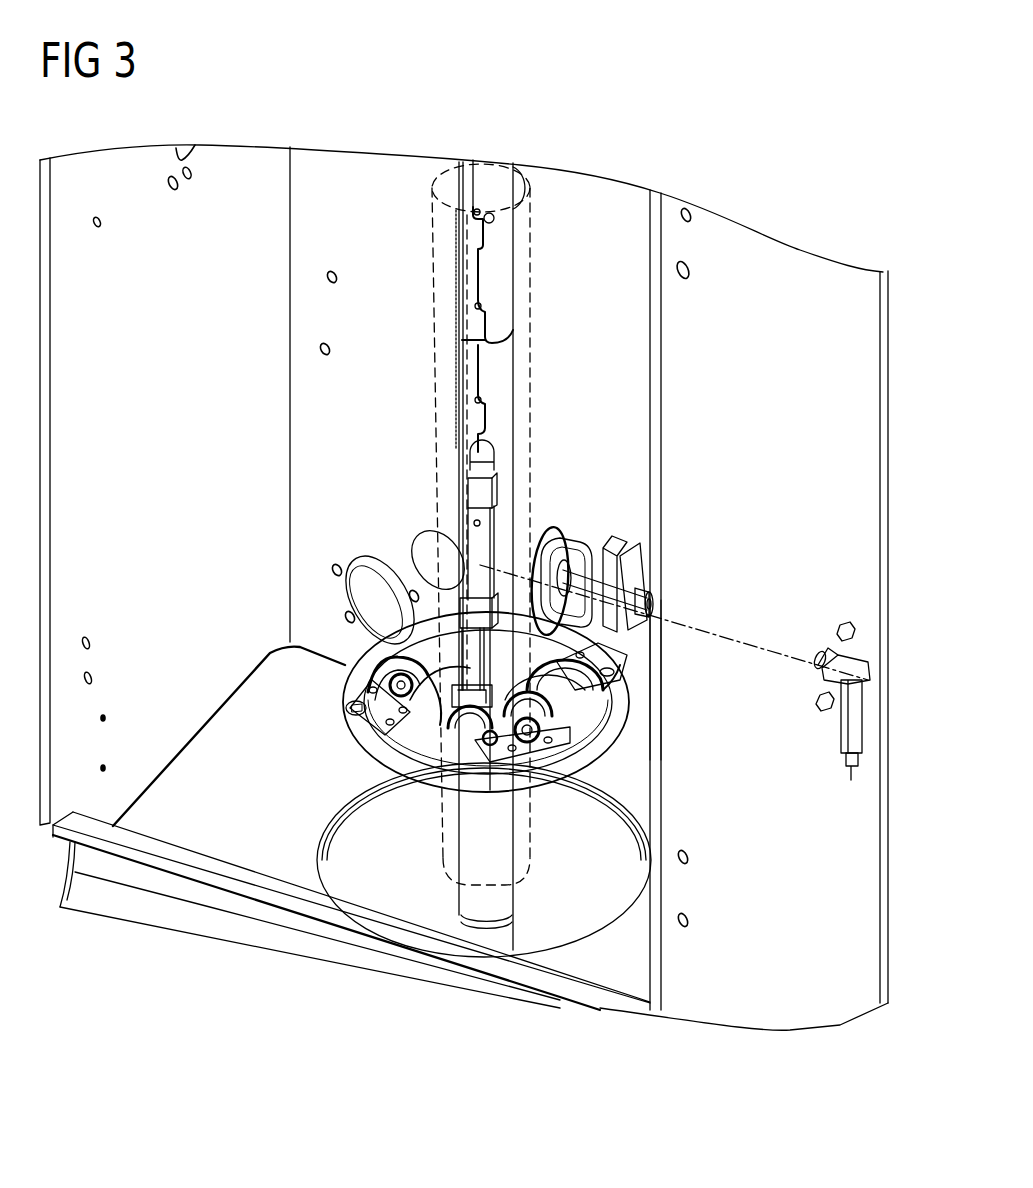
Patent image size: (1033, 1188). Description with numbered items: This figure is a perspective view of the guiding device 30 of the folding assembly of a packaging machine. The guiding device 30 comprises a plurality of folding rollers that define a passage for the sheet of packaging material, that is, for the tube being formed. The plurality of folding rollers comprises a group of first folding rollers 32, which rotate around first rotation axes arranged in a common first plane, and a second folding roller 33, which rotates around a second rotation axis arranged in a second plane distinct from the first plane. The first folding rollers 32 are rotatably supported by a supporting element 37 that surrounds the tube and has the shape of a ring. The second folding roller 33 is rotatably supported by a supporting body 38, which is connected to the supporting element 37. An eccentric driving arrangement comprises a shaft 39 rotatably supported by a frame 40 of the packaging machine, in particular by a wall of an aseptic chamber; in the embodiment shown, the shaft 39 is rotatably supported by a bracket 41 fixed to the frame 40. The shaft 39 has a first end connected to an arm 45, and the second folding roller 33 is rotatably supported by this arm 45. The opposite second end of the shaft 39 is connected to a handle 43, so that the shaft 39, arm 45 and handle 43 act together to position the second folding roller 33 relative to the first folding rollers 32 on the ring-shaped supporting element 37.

The guiding device 30 is at (408, 527).
The first folding rollers 32 is at (425, 655).
The second folding roller 33 is at (537, 532).
The supporting element 37 is at (577, 717).
The supporting body 38 is at (587, 547).
The shaft 39 is at (607, 573).
The frame 40 is at (658, 692).
The bracket 41 is at (643, 573).
The handle 43 is at (858, 723).
The arm 45 is at (530, 557).